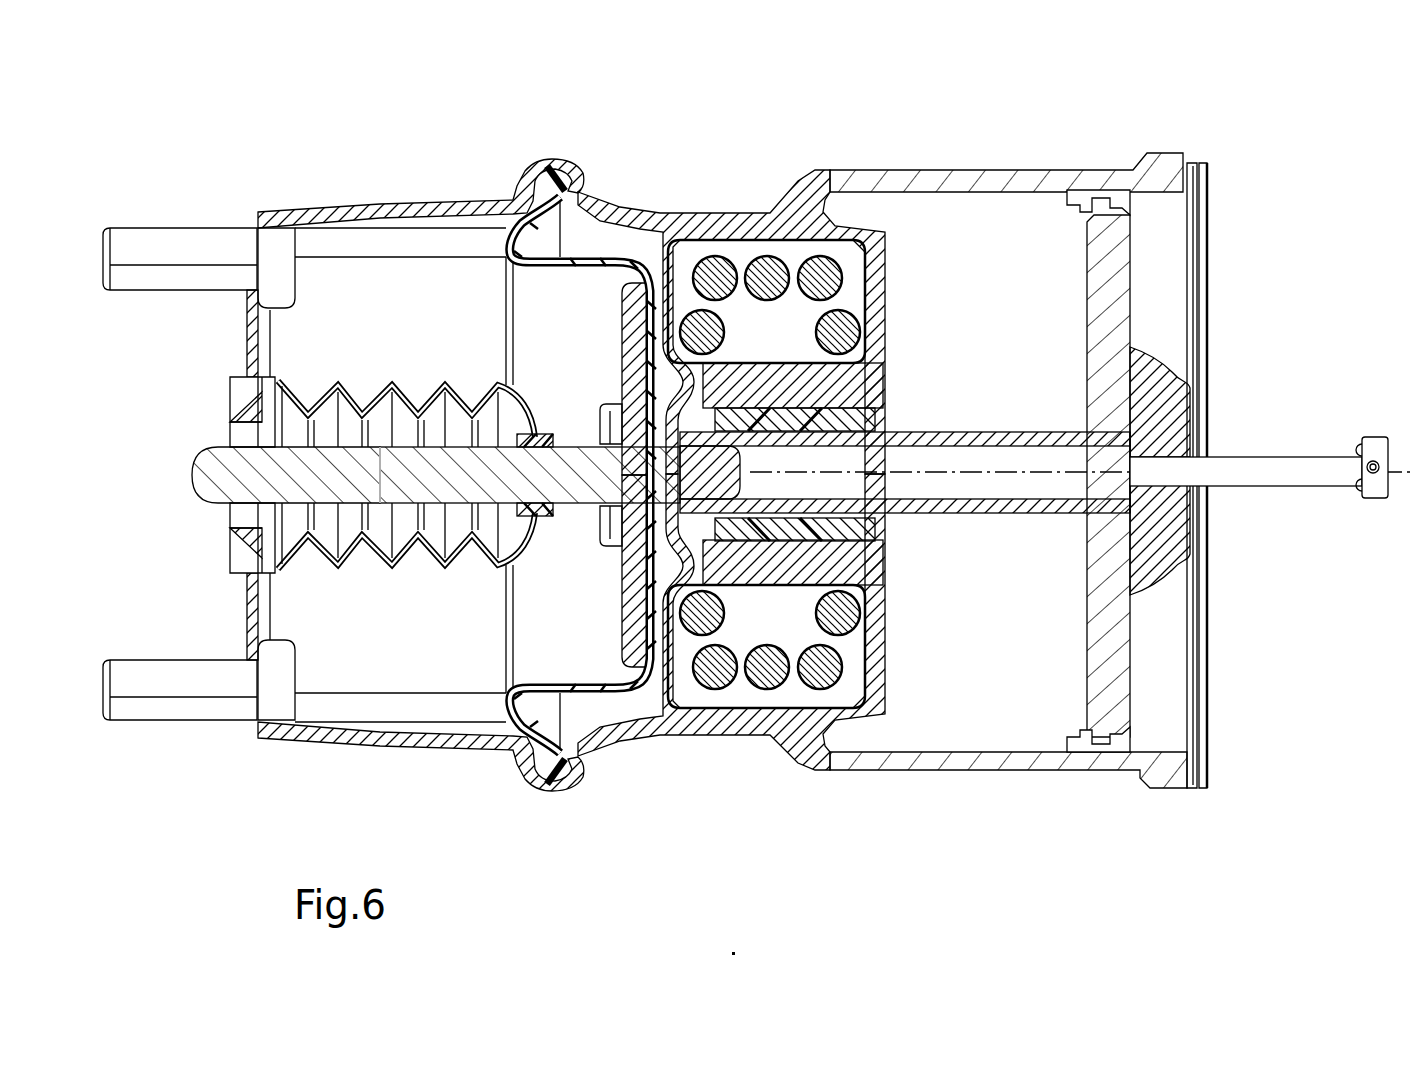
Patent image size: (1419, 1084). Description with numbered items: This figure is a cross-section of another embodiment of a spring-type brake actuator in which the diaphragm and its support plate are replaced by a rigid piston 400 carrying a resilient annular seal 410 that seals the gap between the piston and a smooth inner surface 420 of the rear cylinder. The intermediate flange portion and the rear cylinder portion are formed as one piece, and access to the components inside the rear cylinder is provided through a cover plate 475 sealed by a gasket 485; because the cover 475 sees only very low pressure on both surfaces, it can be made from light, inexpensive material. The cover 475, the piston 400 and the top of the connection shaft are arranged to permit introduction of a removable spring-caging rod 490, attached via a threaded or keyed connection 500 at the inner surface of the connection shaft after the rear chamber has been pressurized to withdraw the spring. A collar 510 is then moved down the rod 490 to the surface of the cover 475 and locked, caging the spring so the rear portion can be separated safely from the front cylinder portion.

The rigid piston 400 is at (1142, 668).
The resilient annular seal 410 is at (1123, 737).
The smooth inner surface of the rear cylinder 420 is at (980, 752).
The cover plate 475 is at (1210, 236).
The gasket 485 is at (1192, 176).
The spring-caging rod 490 is at (1242, 450).
The connection 500 is at (1088, 462).
The collar 510 is at (1398, 425).